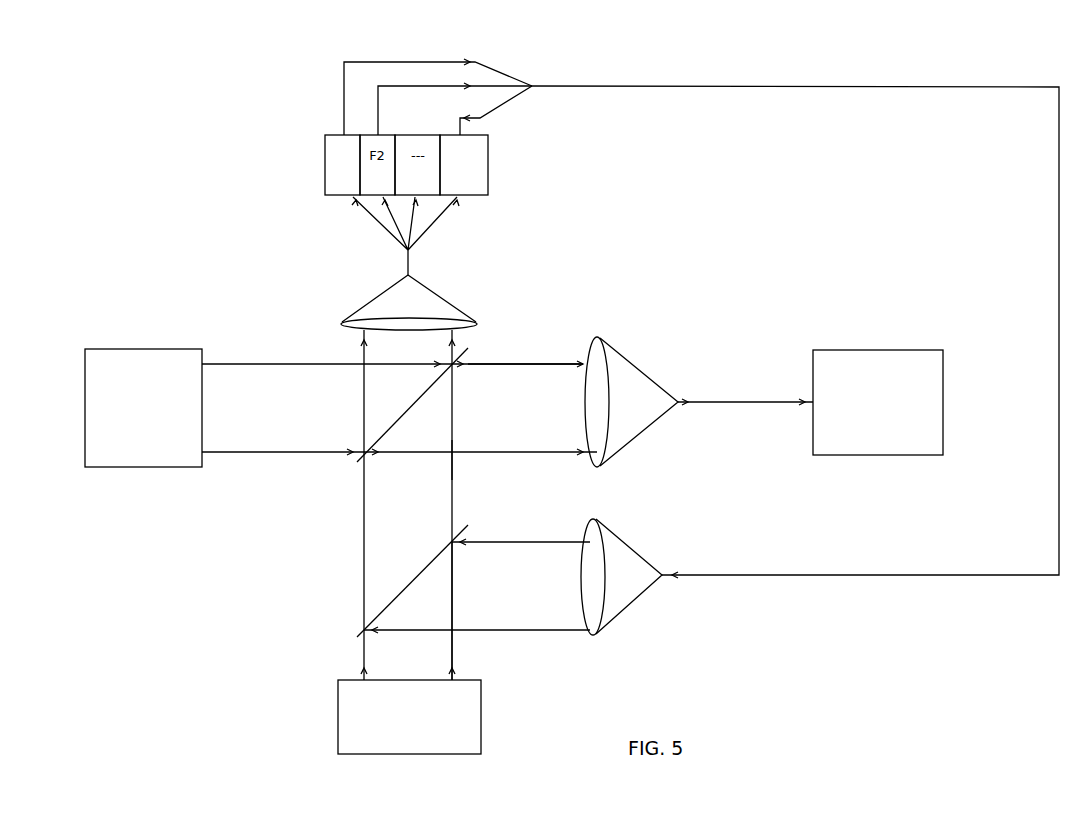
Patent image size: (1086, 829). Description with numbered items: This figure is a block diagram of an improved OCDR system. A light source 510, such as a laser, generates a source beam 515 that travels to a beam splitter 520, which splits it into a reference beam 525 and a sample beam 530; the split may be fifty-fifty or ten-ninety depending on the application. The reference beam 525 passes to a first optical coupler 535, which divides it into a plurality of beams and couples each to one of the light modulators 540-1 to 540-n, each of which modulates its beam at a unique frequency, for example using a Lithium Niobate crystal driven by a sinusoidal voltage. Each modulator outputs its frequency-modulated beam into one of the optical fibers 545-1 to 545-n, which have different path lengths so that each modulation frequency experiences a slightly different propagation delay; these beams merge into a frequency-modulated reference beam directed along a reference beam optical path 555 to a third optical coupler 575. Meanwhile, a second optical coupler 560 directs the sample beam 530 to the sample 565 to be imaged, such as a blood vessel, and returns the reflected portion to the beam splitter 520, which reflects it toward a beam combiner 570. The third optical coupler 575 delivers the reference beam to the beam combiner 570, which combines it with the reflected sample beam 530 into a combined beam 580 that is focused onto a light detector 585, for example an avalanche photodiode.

The light source 510 is at (147, 349).
The source beam 515 is at (243, 363).
The beam splitter 520 is at (357, 457).
The reference beam 525 is at (453, 348).
The sample beam 530 is at (503, 362).
The first optical coupler 535 is at (445, 297).
The light modulator 540-1 is at (325, 190).
The light modulator 540-n is at (488, 180).
The optical fiber 545-1 is at (383, 62).
The optical fiber 545-n is at (462, 130).
The reference beam optical path 555 is at (682, 87).
The second optical coupler 560 is at (643, 372).
The sample 565 is at (850, 350).
The beam combiner 570 is at (358, 640).
The third optical coupler 575 is at (638, 552).
The combined beam 580 is at (455, 640).
The light detector 585 is at (483, 705).